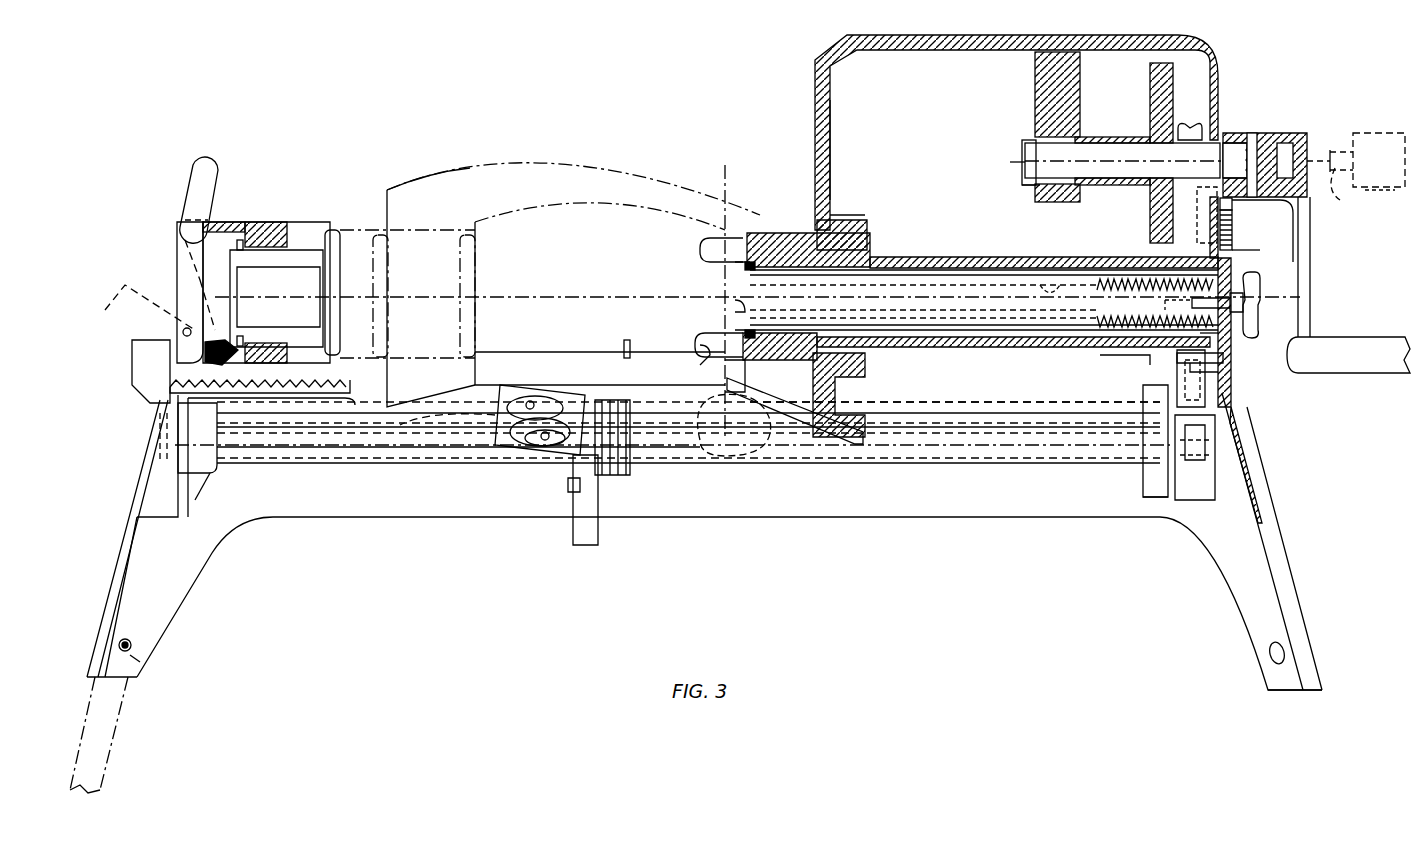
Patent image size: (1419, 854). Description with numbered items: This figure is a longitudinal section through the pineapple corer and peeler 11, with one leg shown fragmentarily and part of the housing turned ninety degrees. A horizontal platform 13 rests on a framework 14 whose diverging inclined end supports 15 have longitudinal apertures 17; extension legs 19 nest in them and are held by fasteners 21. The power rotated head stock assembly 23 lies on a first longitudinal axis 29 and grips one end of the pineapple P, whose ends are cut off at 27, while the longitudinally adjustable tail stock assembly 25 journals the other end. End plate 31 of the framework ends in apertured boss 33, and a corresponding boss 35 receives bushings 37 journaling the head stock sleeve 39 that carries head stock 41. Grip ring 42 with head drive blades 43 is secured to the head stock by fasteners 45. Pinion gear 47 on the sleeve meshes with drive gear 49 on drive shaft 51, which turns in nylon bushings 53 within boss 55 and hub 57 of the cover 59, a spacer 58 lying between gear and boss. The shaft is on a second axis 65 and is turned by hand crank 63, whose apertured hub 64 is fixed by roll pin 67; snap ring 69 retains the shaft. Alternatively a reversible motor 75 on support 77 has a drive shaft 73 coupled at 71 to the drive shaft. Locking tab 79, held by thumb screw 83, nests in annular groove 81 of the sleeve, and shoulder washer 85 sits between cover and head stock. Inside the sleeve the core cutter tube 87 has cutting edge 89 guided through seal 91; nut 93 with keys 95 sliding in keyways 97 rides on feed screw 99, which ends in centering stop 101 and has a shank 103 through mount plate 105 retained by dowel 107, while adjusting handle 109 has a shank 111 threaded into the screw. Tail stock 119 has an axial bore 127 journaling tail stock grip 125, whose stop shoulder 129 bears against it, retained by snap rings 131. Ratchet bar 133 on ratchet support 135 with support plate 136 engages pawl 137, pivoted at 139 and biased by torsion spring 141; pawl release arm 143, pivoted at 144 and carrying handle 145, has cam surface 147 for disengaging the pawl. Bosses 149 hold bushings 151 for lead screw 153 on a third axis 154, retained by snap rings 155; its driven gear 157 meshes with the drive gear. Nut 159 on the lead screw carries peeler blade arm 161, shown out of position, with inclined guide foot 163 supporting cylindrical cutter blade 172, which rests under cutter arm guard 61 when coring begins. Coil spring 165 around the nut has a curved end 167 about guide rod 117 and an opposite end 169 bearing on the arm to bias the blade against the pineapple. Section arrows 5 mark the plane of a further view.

The section line 5- 5 is at (619, 552).
The pineapple corer and peeler 11 is at (812, 108).
The horizontal platform 13 is at (1235, 398).
The framework 14 is at (115, 560).
The inclined end supports 15 is at (100, 622).
The longitudinal apertures 17 is at (133, 645).
The extension legs 19 is at (128, 710).
The fasteners 21 is at (142, 665).
The head stock assembly 23 is at (778, 228).
The tail stock assembly 25 is at (328, 212).
The cut-off ends 27 is at (728, 215).
The first longitudinal axis 29 is at (500, 297).
The end plate 31 is at (1212, 395).
The apertured boss 33 is at (1195, 293).
The apertured boss 35 is at (868, 235).
The bushings 37 is at (855, 333).
The head stock sleeve 39 is at (975, 257).
The head stock 41 is at (750, 232).
The grip ring 42 is at (735, 385).
The head drive blades 43 is at (700, 250).
The fasteners 45 is at (715, 262).
The pinion gear 47 is at (1125, 360).
The drive gear 49 is at (1150, 190).
The drive shaft 51 is at (1025, 165).
The nylon bushings 53 is at (1095, 140).
The boss 55 is at (1040, 75).
The hub 57 is at (1190, 124).
The spacer 58 is at (1100, 140).
The housing 59 is at (831, 150).
The cutter arm guard 61 is at (775, 385).
The hand crank 63 is at (1311, 282).
The apertured hub 64 is at (1268, 135).
The second axis 65 is at (1022, 152).
The transverse roll pin 67 is at (1252, 133).
The snap ring 69 is at (1025, 185).
The coupling 71 is at (1325, 165).
The motor drive shaft 73 is at (1345, 197).
The electric reversible motor 75 is at (1385, 125).
The support 77 is at (1392, 194).
The locking tab 79 is at (1234, 228).
The annular groove 81 is at (1230, 340).
The thumb screw 83 is at (1232, 204).
The shoulder washer 85 is at (838, 237).
The core cutter tube 87 is at (922, 268).
The cutting annular edge 89 is at (725, 325).
The seal 91 is at (755, 290).
The nut 93 is at (1100, 278).
The lateral keys 95 is at (1240, 242).
The longitudinal keyways 97 is at (1122, 278).
The feed screw 99 is at (1062, 283).
The centering stop 101 is at (732, 300).
The shank 103 is at (1245, 256).
The mount plate 105 is at (1232, 374).
The dowel 107 is at (1225, 358).
The adjusting handle 109 is at (1258, 280).
The shank 111 is at (1246, 303).
The guide rod 117 is at (645, 365).
The tail stock 119 is at (248, 222).
The tail stock grip 125 is at (335, 230).
The axial bore 127 is at (268, 250).
The stop shoulder 129 is at (272, 222).
The snap rings 131 is at (225, 212).
The ratchet bar 133 is at (145, 390).
The ratchet support 135 is at (300, 445).
The support plate 136 is at (140, 488).
The pawl 137 is at (228, 400).
The pivot 139 is at (240, 336).
The torsion spring 141 is at (260, 340).
The pawl release arm 143 is at (176, 250).
The pivot 144 is at (183, 332).
The transverse handle 145 is at (196, 192).
The cam surface 147 is at (200, 355).
The bosses 149 is at (210, 473).
The bushings 151 is at (200, 490).
The lead screw 153 is at (1105, 465).
The third axis 154 is at (1045, 447).
The snap rings 155 is at (160, 420).
The driven gear 157 is at (1148, 498).
The nut 159 is at (632, 470).
The peeler blade arm 161 is at (577, 462).
The inclined guide foot 163 is at (582, 392).
The coil spring 165 is at (605, 475).
The curved end 167 is at (628, 340).
The transverse end portion 169 is at (568, 485).
The cylindrical cutter blade 172 is at (495, 405).
The pineapple P is at (478, 165).